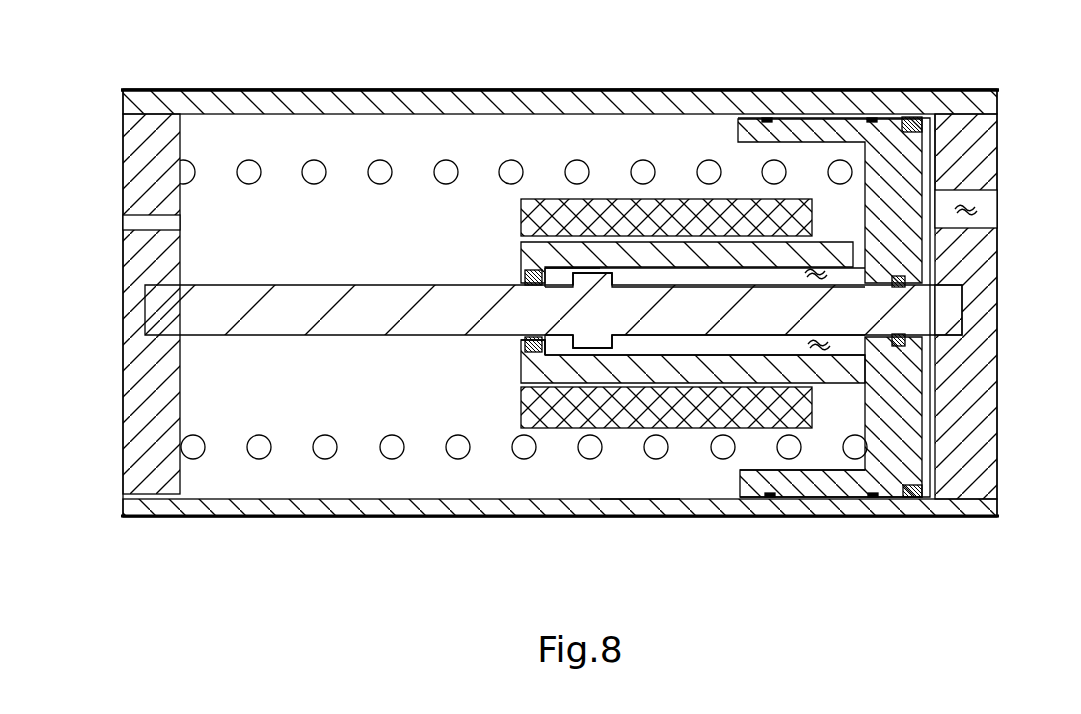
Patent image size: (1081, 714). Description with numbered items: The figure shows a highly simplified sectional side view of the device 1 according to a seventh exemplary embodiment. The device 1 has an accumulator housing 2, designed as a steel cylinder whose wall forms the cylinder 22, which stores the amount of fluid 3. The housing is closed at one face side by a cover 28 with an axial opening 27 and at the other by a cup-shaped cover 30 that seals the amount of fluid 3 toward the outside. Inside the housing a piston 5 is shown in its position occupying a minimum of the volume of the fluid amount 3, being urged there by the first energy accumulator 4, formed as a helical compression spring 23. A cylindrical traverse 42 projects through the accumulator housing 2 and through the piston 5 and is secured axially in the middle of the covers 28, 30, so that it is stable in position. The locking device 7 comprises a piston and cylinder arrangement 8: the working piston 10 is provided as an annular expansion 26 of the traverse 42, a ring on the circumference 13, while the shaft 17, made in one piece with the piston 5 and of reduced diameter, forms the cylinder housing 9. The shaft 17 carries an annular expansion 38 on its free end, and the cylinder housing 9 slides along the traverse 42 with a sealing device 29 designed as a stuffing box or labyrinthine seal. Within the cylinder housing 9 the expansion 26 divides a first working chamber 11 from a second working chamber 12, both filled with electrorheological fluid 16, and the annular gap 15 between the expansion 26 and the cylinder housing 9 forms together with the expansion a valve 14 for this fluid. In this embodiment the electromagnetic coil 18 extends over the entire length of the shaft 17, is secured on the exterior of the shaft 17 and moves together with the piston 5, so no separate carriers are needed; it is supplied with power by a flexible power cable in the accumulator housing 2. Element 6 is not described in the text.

The device 1 is at (632, 74).
The accumulator housing 2 is at (560, 265).
The amount of fluid 3 is at (955, 207).
The first energy accumulator 4 is at (511, 101).
The piston 5 is at (915, 160).
The lower chamber 6 is at (638, 474).
The locking device 7 is at (562, 444).
The piston and cylinder arrangement 8 is at (506, 354).
The cylinder housing 9 is at (698, 373).
The working piston 10 is at (683, 285).
The first working chamber 11 is at (558, 275).
The second working chamber 12 is at (730, 270).
The circumference 13 is at (597, 275).
The valve 14 is at (563, 358).
The gap 15 is at (600, 268).
The electrorheological fluid 16 is at (812, 273).
The shaft 17 is at (826, 370).
The electromagnetic coil 18 is at (757, 408).
The cylinder 22 is at (545, 108).
The helical compression spring 23 is at (379, 164).
The expansion 26 is at (633, 343).
The axial opening 27 is at (135, 222).
The cover 28 is at (120, 304).
The sealing device 29 is at (513, 279).
The cover 30 is at (990, 306).
The annular expansion 38 is at (899, 345).
The cylindrical traverse 42 is at (553, 293).